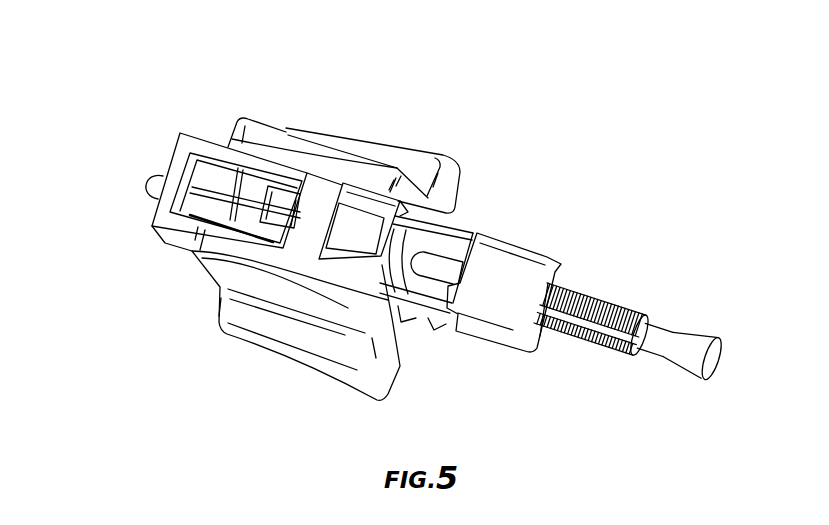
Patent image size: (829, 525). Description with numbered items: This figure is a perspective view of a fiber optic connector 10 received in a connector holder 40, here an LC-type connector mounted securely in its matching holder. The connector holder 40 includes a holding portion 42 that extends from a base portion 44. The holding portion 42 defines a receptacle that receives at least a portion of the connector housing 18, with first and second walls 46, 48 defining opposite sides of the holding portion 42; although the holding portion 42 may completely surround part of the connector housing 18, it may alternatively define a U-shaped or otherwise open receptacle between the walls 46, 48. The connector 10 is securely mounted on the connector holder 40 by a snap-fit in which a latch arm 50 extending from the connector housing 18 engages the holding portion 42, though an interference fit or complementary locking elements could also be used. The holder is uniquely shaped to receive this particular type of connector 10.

The connector 10 is at (526, 238).
The connector housing 18 is at (371, 262).
The connector holder 40 is at (237, 106).
The holding portion 42 is at (153, 235).
The base portion 44 is at (351, 125).
The first wall 46 is at (240, 275).
The second wall 48 is at (308, 126).
The latch arm 50 is at (350, 238).